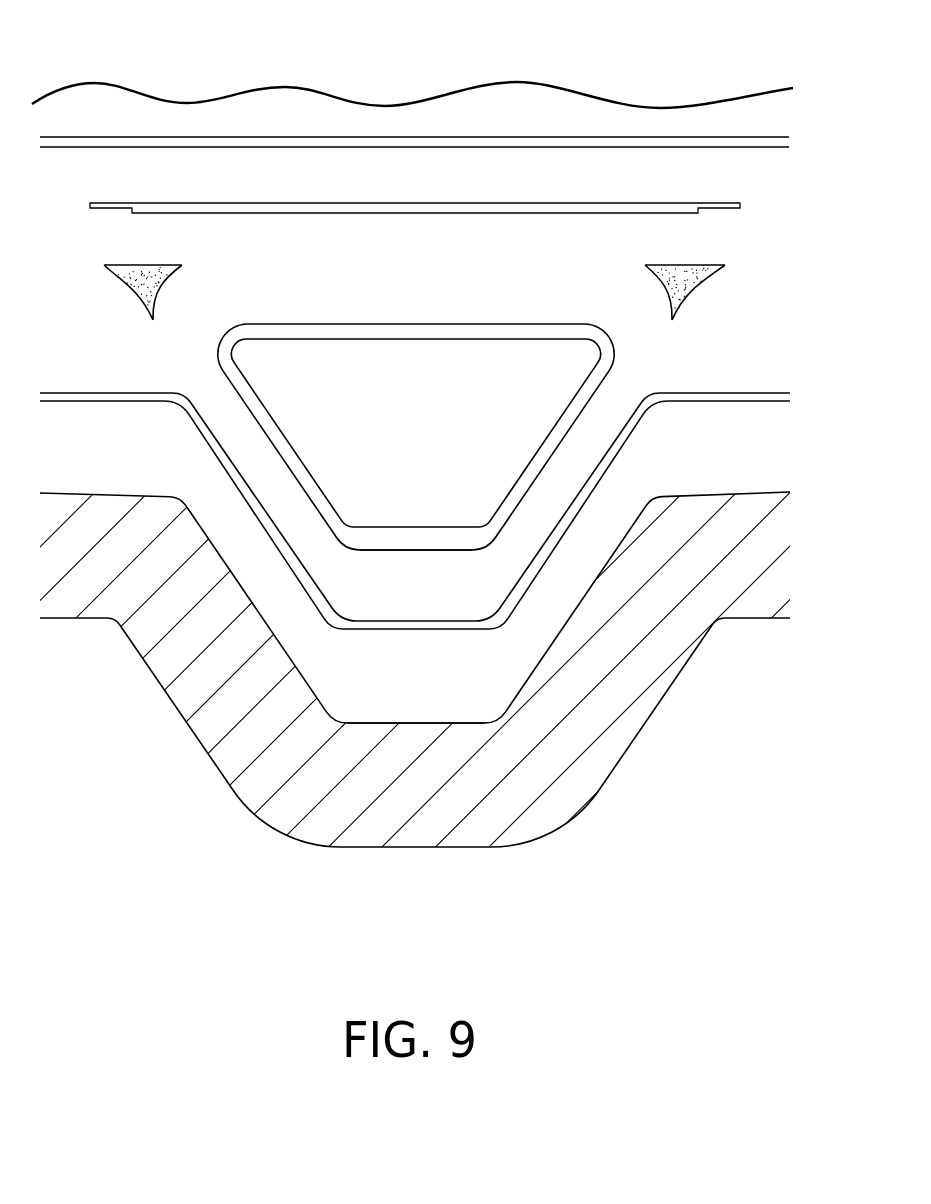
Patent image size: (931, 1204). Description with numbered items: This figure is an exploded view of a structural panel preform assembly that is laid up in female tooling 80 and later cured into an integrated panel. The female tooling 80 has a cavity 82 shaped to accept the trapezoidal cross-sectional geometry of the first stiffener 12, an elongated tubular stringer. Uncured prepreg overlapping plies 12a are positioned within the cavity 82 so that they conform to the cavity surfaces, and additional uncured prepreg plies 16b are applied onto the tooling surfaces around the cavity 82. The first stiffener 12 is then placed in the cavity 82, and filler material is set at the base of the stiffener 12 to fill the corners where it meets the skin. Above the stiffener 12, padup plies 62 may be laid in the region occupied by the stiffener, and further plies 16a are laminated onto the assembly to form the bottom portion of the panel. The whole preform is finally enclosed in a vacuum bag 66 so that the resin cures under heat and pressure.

The first stiffener 12 is at (397, 332).
The overlapping plies 12a is at (418, 624).
The first portion of skin plies 16a is at (245, 143).
The second portion of skin plies 16b is at (713, 397).
The padup plies 62 is at (602, 207).
The vacuum bag 66 is at (536, 82).
The female tooling 80 is at (279, 756).
The cavity 82 is at (467, 680).